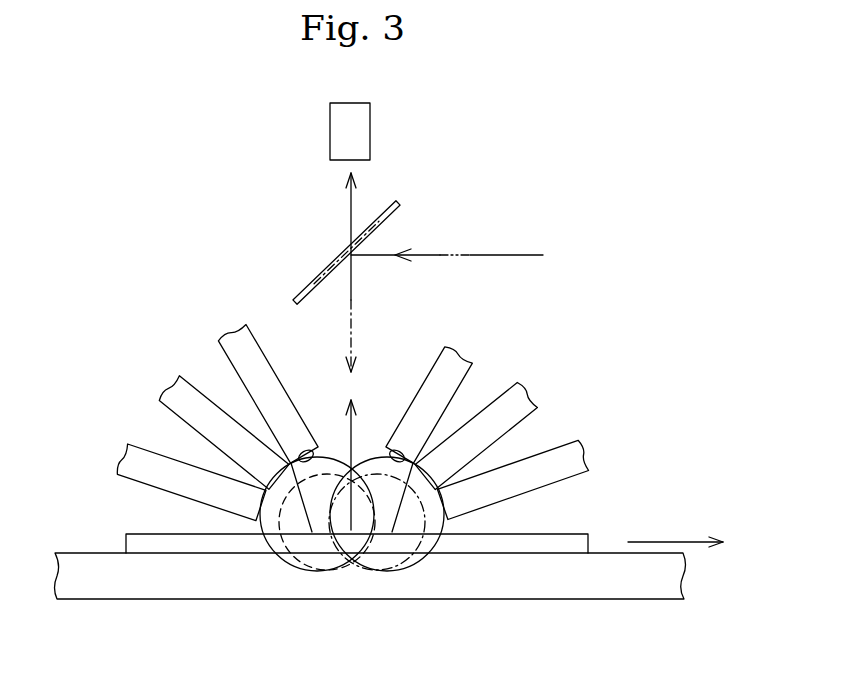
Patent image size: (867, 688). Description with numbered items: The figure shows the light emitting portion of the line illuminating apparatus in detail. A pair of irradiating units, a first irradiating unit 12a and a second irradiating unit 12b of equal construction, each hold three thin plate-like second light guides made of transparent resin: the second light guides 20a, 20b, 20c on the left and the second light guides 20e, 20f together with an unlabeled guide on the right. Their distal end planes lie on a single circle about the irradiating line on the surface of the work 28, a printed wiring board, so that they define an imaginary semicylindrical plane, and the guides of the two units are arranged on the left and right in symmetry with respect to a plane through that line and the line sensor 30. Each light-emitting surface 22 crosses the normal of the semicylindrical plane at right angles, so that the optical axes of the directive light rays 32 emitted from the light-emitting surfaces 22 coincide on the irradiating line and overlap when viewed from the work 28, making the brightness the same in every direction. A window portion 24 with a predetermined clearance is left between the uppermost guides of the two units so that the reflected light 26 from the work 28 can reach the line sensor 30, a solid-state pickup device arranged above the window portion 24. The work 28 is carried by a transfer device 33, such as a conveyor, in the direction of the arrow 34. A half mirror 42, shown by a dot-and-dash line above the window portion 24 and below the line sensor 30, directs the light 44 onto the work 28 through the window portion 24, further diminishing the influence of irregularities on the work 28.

The first irradiating unit 12a is at (179, 375).
The second irradiating unit 12b is at (545, 433).
The second light guide 20a is at (248, 327).
The second light guide 20b is at (188, 417).
The second light guide 20c is at (160, 482).
The second light guide 20e is at (523, 400).
The second light guide 20f is at (578, 472).
The light-emitting surface 22 is at (293, 457).
The window portion 24 is at (365, 437).
The reflected light 26 is at (347, 437).
The work 28 is at (572, 548).
The line sensor 30 is at (371, 126).
The light rays 32 is at (293, 563).
The transfer device 33 is at (113, 585).
The arrow 34 is at (693, 542).
The half mirror 42 is at (396, 224).
The light 44 is at (498, 255).